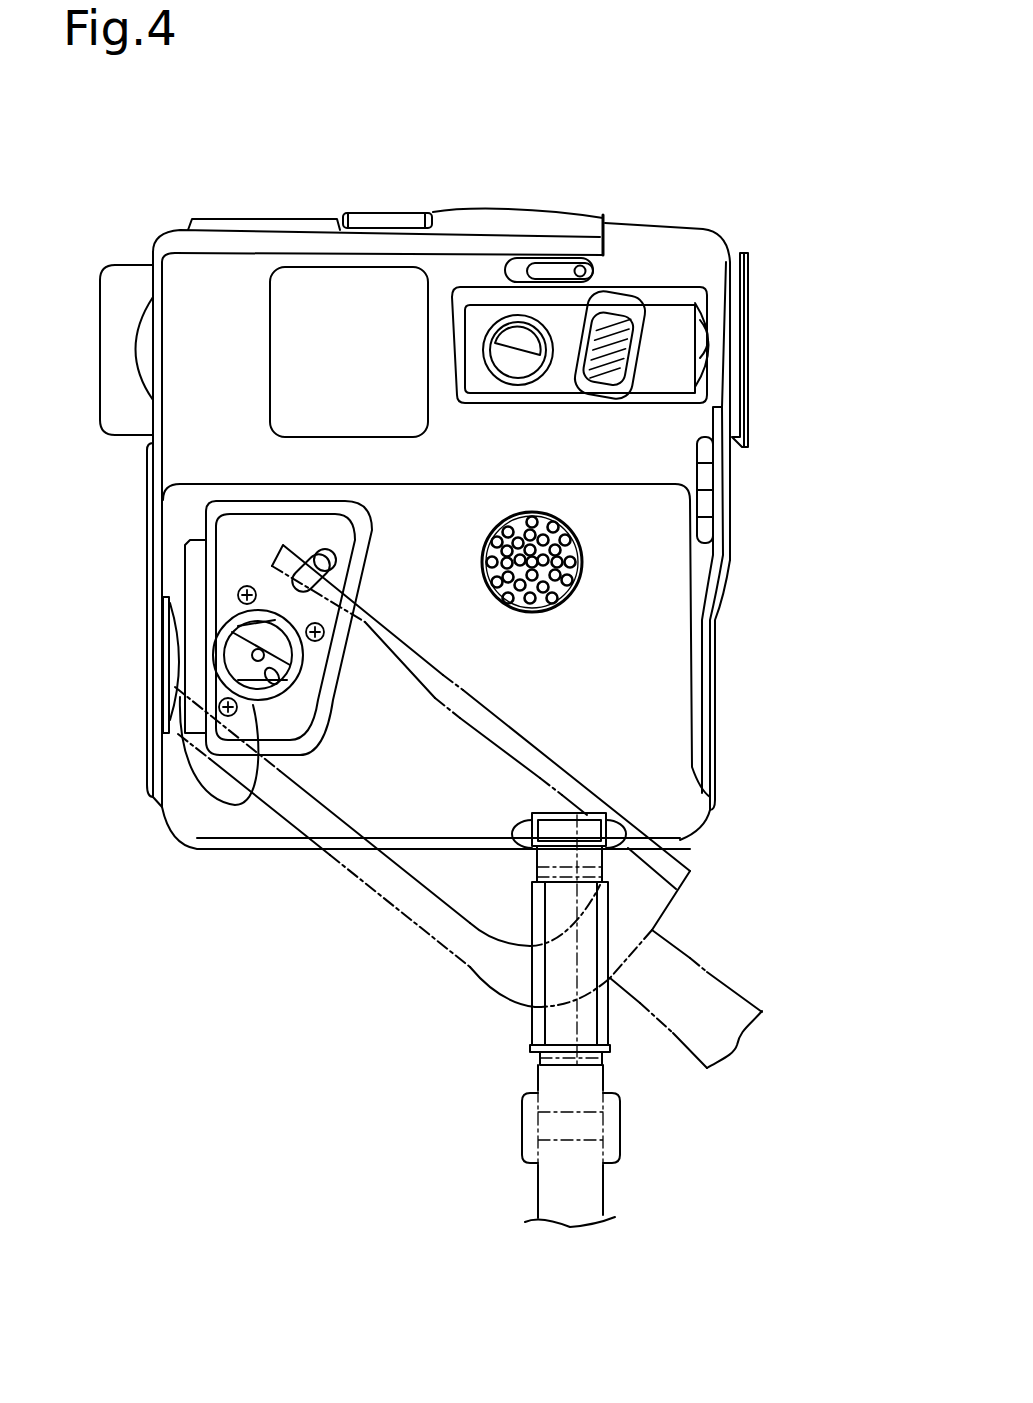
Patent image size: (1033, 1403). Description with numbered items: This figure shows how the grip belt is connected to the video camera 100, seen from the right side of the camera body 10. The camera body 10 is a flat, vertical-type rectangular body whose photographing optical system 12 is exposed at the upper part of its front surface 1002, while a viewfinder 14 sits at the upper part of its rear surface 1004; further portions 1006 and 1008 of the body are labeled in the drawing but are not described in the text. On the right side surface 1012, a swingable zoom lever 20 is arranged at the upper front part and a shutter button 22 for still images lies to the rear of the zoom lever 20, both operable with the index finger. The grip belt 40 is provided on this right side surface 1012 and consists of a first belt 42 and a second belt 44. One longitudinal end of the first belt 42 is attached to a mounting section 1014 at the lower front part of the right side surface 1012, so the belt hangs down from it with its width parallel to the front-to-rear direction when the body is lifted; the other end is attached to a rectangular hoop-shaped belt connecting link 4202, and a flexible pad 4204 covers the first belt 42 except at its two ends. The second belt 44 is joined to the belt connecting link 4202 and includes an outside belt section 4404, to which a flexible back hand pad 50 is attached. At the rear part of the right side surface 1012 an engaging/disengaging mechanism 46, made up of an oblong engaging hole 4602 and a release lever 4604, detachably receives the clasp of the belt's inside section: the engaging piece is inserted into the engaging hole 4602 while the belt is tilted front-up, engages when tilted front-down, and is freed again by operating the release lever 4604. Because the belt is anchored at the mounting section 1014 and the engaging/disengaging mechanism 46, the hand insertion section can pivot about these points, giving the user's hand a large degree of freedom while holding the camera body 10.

The video camera 100 is at (500, 99).
The camera body 10 is at (566, 204).
The photographing optical system 12 is at (750, 298).
The viewfinder 14 is at (99, 290).
The zoom lever 20 is at (622, 332).
The shutter button 22 is at (523, 340).
The grip belt 40 is at (434, 954).
The first belt 42 is at (604, 1065).
The second belt 44 is at (538, 1196).
The engaging/disengaging mechanism 46 is at (263, 715).
The back hand pad 50 is at (393, 908).
The front surface 1002 is at (719, 716).
The rear surface 1004 is at (147, 716).
The top lid 1006 is at (330, 218).
The bottom face 1008 is at (272, 853).
The right side surface 1012 is at (645, 660).
The mounting section 1014 is at (568, 825).
The belt connecting link 4202 is at (620, 1143).
The pad 4204 is at (607, 1022).
The outside belt section 4404 is at (687, 953).
The engaging hole 4602 is at (262, 668).
The release lever 4604 is at (335, 568).